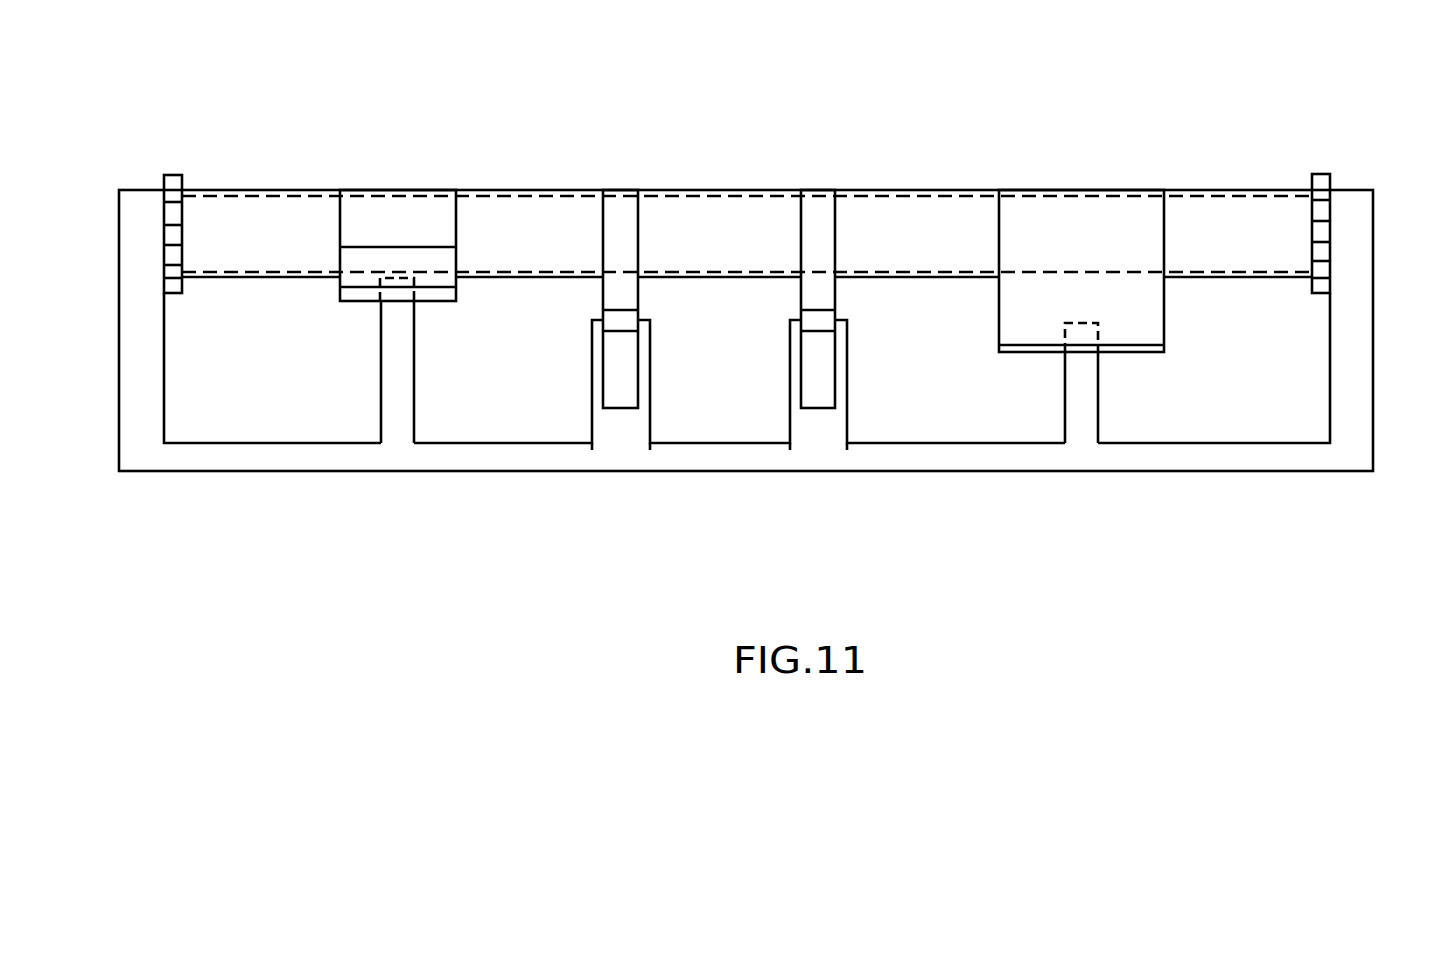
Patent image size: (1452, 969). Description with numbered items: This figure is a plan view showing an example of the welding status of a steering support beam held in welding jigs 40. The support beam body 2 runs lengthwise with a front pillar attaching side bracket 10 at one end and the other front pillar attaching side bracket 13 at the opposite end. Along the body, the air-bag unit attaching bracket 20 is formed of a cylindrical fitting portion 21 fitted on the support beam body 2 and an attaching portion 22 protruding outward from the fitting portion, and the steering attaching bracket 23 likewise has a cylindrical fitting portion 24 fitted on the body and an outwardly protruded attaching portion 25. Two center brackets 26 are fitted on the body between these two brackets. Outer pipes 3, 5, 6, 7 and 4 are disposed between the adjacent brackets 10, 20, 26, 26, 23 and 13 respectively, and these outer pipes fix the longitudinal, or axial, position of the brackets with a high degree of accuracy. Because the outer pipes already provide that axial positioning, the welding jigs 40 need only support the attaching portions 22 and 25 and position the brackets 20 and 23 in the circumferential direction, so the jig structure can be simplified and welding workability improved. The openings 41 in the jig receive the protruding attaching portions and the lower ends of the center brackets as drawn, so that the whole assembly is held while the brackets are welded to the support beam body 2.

The support beam body 2 is at (225, 197).
The outer pipe 3 is at (303, 213).
The outer pipe 4 is at (1242, 218).
The outer pipe 5 is at (542, 213).
The outer pipe 6 is at (708, 213).
The outer pipe 7 is at (910, 213).
The front pillar attaching side bracket 10 is at (172, 233).
The front pillar attaching side bracket 13 is at (1323, 230).
The air-bag unit attaching bracket 20 is at (397, 243).
The fitting portion 21 is at (362, 213).
The attaching portion 22 is at (358, 293).
The steering attaching bracket 23 is at (1095, 261).
The fitting portion 24 is at (1029, 212).
The attaching portion 25 is at (1142, 322).
The center bracket 26 is at (617, 210).
The welding jig 40 is at (1260, 455).
The passage 41 is at (395, 399).